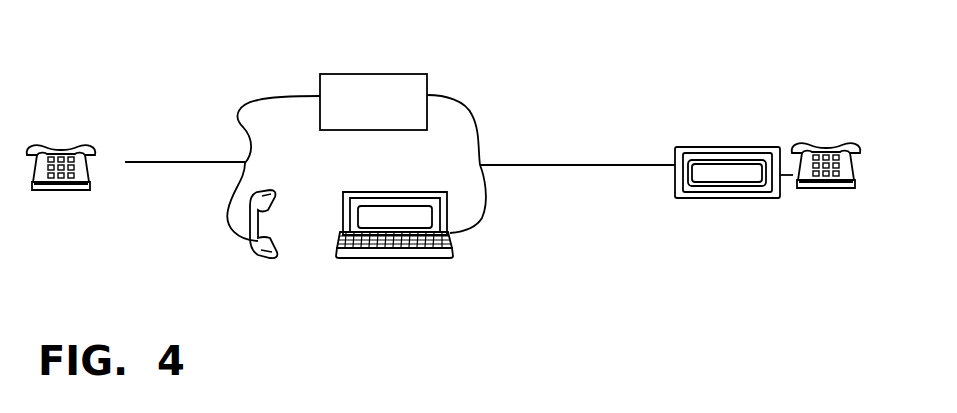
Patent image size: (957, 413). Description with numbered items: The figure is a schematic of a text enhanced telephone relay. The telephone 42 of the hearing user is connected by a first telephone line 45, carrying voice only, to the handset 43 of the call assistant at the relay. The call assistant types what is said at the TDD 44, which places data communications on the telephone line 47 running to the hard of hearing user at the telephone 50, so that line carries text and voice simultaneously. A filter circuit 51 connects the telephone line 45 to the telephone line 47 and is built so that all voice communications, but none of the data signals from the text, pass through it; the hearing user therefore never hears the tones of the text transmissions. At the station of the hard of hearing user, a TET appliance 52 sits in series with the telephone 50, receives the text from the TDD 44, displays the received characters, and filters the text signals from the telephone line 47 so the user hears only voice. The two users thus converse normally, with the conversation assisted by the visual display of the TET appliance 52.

The telephone 42 is at (61, 195).
The handset 43 is at (253, 257).
The TDD 44 is at (437, 268).
The first telephone line 45 is at (137, 152).
The telephone line 47 is at (483, 168).
The telephone 50 is at (818, 198).
The filter circuit 51 is at (432, 65).
The TET appliance 52 is at (703, 204).